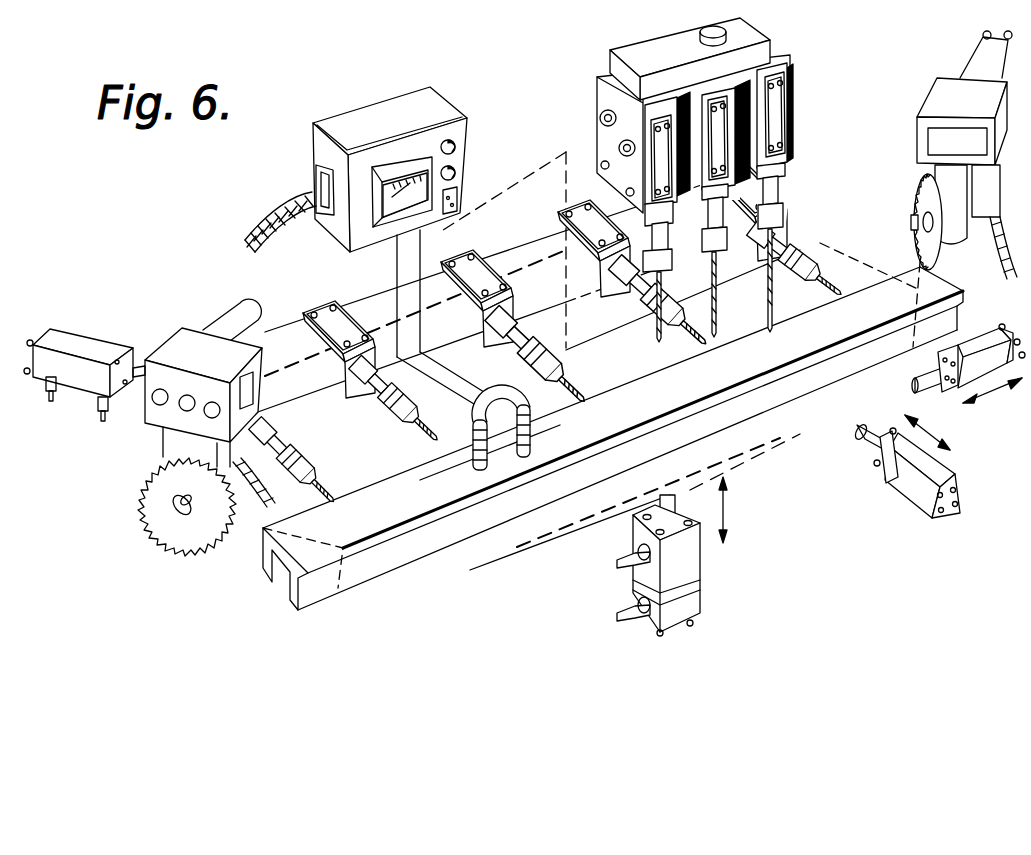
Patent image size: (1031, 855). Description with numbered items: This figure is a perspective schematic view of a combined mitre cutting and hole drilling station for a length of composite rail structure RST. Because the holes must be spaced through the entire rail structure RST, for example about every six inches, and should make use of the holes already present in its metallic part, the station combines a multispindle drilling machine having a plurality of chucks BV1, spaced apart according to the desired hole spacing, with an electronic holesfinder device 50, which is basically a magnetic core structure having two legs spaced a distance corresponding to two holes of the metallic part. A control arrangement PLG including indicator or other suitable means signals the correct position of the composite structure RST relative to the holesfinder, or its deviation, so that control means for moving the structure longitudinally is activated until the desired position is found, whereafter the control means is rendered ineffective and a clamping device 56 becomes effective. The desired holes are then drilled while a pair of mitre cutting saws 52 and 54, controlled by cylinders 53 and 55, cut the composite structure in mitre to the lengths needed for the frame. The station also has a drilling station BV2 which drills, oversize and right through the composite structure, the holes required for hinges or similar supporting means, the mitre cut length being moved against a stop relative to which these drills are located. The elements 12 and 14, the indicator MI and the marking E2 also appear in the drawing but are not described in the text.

The rail member 12 is at (290, 605).
The rail end flange 14 is at (265, 575).
The electronic holesfinder device 50 is at (507, 392).
The mitre cutting saw 52 is at (920, 198).
The cylinder 53 is at (978, 60).
The mitre cutting saw 54 is at (140, 508).
The cylinder 55 is at (97, 345).
The clamping device 56 is at (695, 566).
The control arrangement PLG is at (368, 114).
The meter indicator MI is at (390, 218).
The chucks of multispindle drilling machine BV1 is at (285, 437).
The drilling station BV2 is at (750, 36).
The feed direction E2 is at (371, 519).
The rail structure RST is at (467, 523).